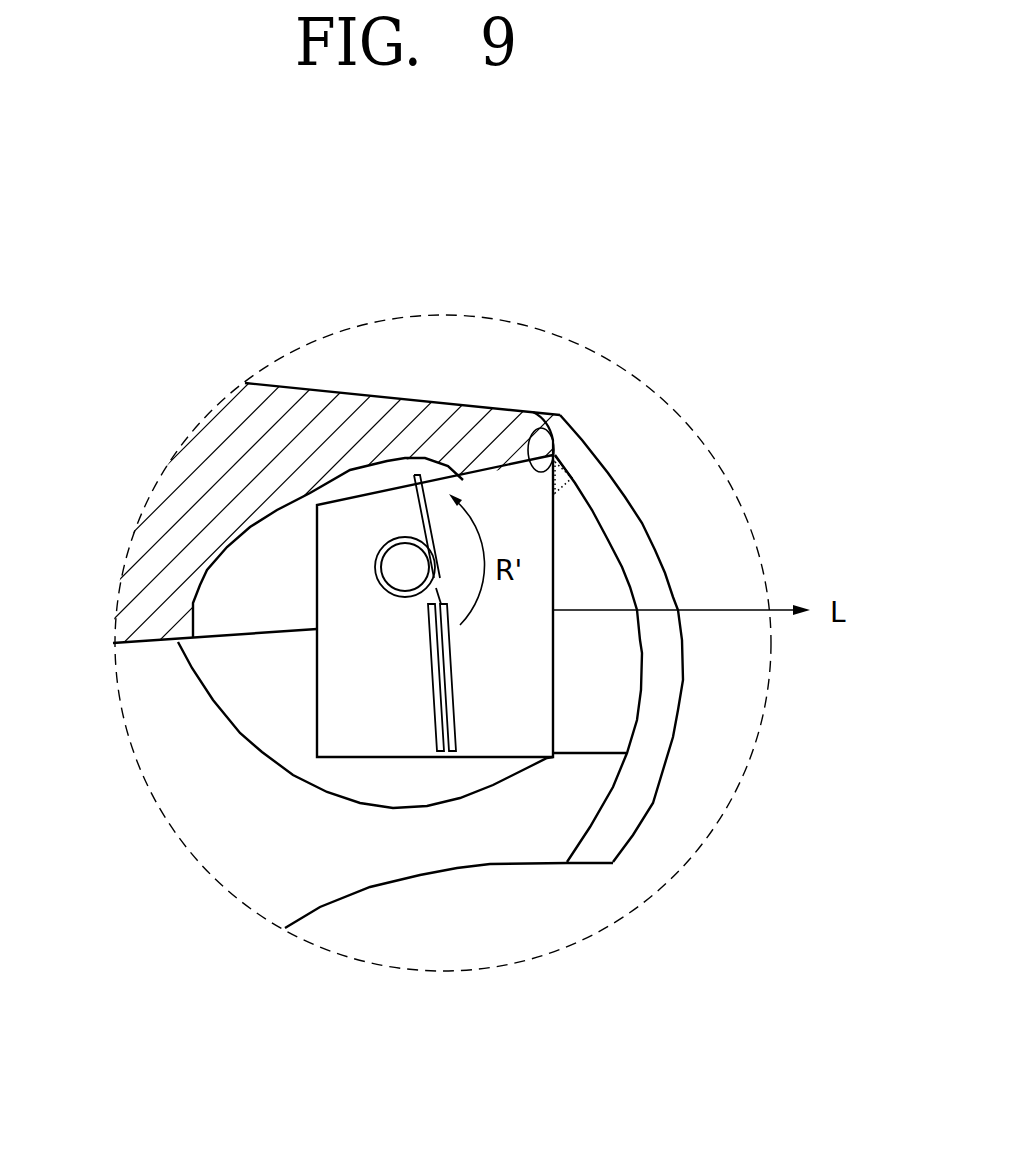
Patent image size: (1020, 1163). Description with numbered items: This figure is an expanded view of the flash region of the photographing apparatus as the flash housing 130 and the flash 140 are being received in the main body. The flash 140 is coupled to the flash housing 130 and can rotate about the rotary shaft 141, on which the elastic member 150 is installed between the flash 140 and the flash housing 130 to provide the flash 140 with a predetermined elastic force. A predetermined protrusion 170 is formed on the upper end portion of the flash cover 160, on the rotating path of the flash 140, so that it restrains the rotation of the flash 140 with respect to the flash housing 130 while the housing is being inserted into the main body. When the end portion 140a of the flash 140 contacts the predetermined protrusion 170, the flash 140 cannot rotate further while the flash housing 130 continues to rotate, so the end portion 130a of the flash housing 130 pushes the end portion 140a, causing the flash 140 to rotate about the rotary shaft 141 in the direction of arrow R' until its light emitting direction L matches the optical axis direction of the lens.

The flash housing 130 is at (185, 497).
The end portion of the flash housing 130a is at (487, 437).
The flash 140 is at (535, 695).
The end portion of the flash 140a is at (560, 416).
The rotary shaft 141 is at (402, 563).
The elastic member 150 is at (427, 452).
The flash cover 160 is at (640, 550).
The predetermined protrusion 170 is at (562, 470).